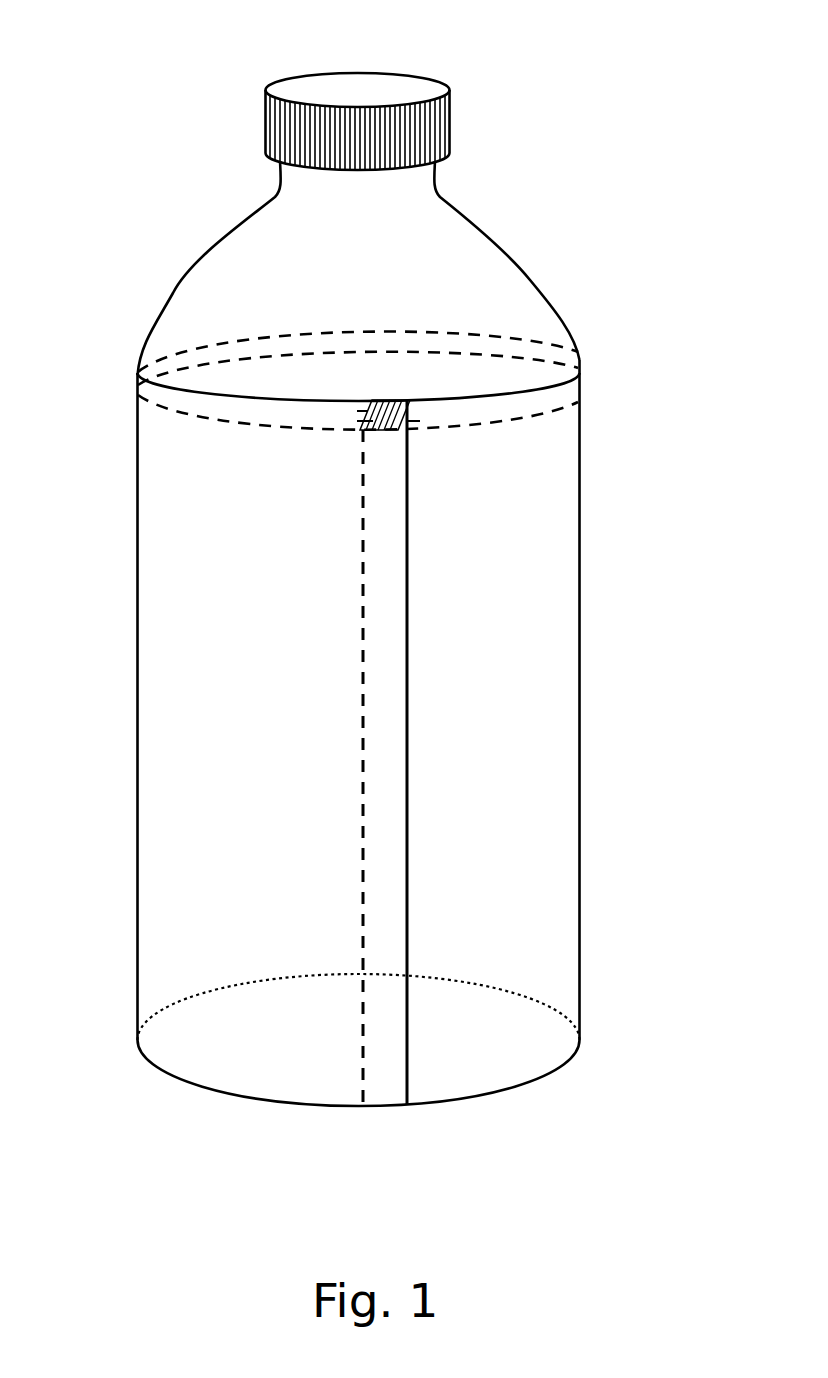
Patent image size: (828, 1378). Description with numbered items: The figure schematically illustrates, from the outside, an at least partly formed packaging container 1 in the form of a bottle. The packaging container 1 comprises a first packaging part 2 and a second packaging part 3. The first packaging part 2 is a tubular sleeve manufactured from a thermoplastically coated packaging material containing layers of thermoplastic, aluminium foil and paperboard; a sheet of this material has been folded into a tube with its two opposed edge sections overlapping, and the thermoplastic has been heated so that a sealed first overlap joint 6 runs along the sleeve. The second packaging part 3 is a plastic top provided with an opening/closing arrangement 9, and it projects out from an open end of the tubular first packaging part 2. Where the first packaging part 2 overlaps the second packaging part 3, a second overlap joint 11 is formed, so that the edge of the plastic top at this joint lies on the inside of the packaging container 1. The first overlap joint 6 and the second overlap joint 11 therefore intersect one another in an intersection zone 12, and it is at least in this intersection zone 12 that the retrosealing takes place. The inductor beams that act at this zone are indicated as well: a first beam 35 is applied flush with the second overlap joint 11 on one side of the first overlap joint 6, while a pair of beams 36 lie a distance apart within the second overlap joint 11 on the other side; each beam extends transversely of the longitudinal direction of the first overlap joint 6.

The packaging container 1 is at (168, 201).
The first packaging part 2 is at (556, 672).
The second packaging part 3 is at (470, 273).
The first overlap joint 6 is at (389, 1078).
The opening/closing arrangement 9 is at (368, 92).
The second overlap joint 11 is at (545, 399).
The intersection zone 12 is at (386, 400).
The first beam 35 is at (413, 422).
The pair of beams 36 is at (362, 428).